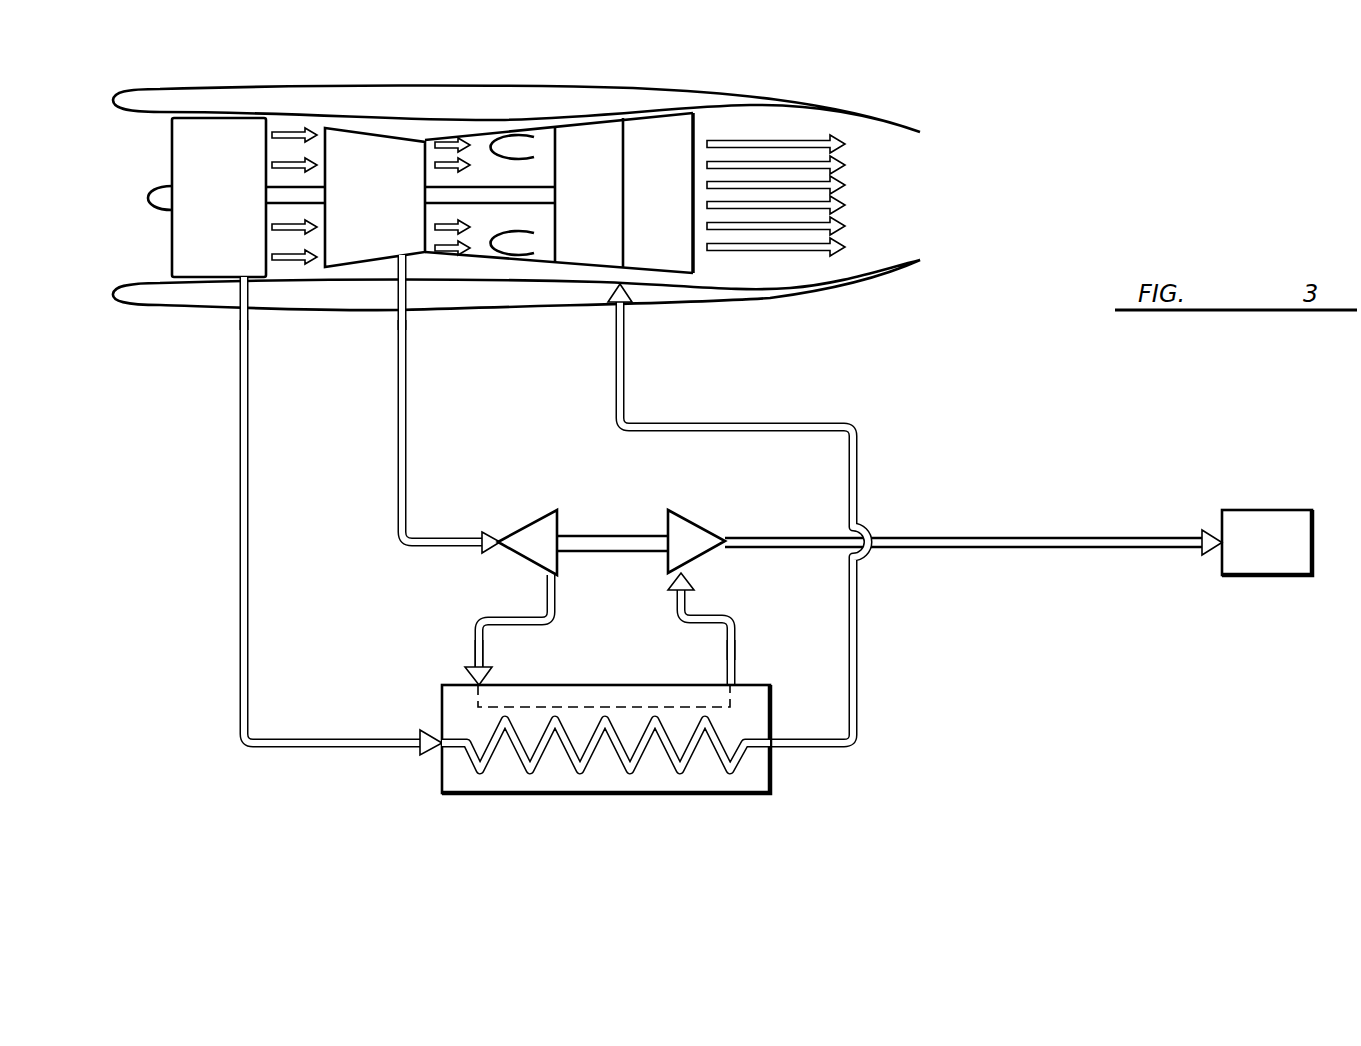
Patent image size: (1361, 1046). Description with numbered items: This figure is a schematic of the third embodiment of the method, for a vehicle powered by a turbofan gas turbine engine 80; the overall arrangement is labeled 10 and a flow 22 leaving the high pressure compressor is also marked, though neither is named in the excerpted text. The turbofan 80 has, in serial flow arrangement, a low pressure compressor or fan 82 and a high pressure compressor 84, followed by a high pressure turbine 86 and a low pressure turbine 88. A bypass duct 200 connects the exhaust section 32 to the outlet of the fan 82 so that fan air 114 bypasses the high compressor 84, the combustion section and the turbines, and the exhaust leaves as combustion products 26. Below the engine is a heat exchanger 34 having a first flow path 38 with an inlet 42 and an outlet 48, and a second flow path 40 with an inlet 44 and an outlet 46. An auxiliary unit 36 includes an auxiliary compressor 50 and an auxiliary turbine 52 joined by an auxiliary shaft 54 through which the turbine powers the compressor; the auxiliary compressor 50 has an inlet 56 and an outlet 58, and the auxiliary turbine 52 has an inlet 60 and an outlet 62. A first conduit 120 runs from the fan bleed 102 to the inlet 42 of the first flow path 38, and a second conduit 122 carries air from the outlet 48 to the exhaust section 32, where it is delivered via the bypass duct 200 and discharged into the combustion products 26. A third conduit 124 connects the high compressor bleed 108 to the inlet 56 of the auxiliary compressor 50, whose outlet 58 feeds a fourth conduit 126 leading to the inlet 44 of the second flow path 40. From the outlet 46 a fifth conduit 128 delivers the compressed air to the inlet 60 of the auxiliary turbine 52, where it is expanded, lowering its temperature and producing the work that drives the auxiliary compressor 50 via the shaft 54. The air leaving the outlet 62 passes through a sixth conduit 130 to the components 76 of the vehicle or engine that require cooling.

The propulsion system 10 is at (1014, 731).
The core engine airflow 22 is at (463, 165).
The combustion products 26 is at (846, 165).
The exhaust section 32 is at (770, 125).
The heat exchanger 34 is at (487, 783).
The auxiliary unit 36 is at (478, 587).
The first flow path 38 is at (650, 757).
The second flow path 40 is at (615, 705).
The inlet of the first flow path 42 is at (442, 745).
The inlet of the second flow path 44 is at (483, 683).
The outlet of the second flow path 46 is at (725, 683).
The outlet of the first flow path 48 is at (775, 752).
The auxiliary compressor 50 is at (538, 518).
The auxiliary turbine 52 is at (700, 520).
The auxiliary shaft 54 is at (615, 535).
The inlet of the auxiliary compressor 56 is at (500, 538).
The outlet of the auxiliary compressor 58 is at (553, 576).
The inlet of the auxiliary turbine 60 is at (682, 573).
The outlet of the auxiliary turbine 62 is at (723, 535).
The components of the vehicle or engine which need to be cooled 76 is at (1266, 510).
The turbofan 80 is at (645, 82).
The fan 82 is at (237, 130).
The high pressure compressor 84 is at (381, 142).
The high pressure turbine 86 is at (607, 207).
The low pressure turbine 88 is at (680, 207).
The fan bleed 102 is at (256, 278).
The high compressor bleed 108 is at (411, 257).
The fan air 114 is at (318, 150).
The first conduit 120 is at (240, 450).
The second conduit 122 is at (800, 420).
The third conduit 124 is at (407, 440).
The fourth conduit 126 is at (470, 632).
The fifth conduit 128 is at (738, 631).
The sixth conduit 130 is at (1035, 537).
The bypass duct 200 is at (512, 270).